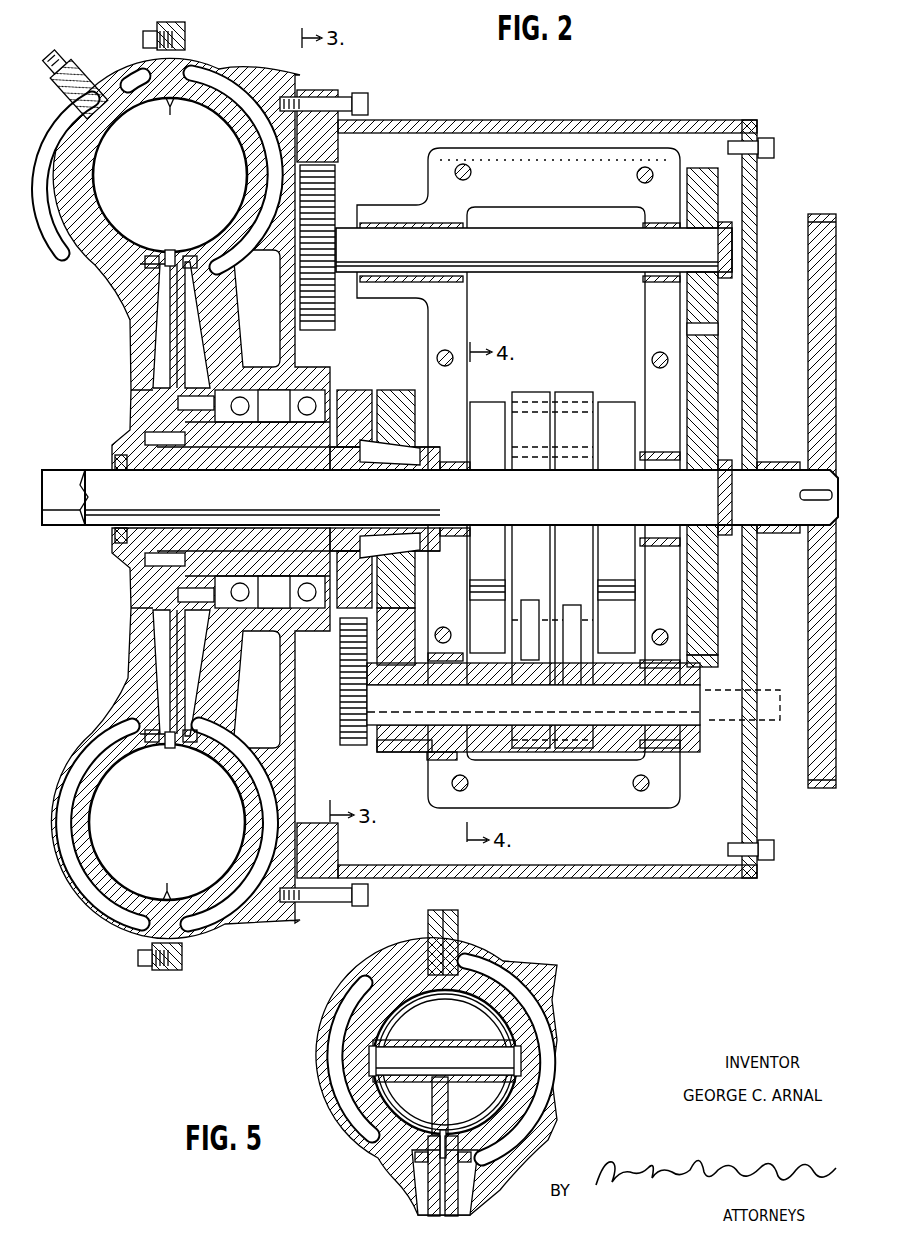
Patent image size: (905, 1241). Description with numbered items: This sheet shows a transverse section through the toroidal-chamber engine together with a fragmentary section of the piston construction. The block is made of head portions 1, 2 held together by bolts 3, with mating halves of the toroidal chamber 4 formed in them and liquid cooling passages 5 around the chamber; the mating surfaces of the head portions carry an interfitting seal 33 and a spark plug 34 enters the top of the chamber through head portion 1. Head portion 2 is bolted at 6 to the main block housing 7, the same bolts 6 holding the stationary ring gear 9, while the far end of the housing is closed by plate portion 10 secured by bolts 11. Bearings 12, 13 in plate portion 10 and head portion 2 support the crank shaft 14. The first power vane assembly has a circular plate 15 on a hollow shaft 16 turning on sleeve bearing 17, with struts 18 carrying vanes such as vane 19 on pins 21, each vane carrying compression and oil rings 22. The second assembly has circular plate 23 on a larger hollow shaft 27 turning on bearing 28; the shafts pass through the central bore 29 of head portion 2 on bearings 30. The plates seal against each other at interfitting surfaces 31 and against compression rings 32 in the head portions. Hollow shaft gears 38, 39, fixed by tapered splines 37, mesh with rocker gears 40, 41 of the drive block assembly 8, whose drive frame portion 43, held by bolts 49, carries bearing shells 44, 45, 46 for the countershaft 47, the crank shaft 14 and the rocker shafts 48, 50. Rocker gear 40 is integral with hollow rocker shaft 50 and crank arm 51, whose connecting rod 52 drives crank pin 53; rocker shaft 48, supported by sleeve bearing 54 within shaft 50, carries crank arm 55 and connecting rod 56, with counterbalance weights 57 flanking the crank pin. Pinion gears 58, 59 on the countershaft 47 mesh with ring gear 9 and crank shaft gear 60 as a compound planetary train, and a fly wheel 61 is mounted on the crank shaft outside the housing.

In FIG. 2, the head portion 1 is at (56, 162).
In FIG. 5, the head portion 1 is at (332, 1066).
In FIG. 2, the head portion 2 is at (224, 70).
In FIG. 5, the head portion 2 is at (488, 972).
In FIG. 2, the bolt 3 is at (146, 40).
In FIG. 2, the toroidal chamber 4 is at (96, 176).
In FIG. 5, the toroidal chamber 4 is at (445, 1062).
In FIG. 2, the liquid cooling passage 5 is at (258, 170).
In FIG. 5, the liquid cooling passage 5 is at (441, 1059).
In FIG. 2, the bolt 6 is at (362, 100).
In FIG. 2, the main block housing 7 is at (580, 120).
In FIG. 2, the drive block assembly 8 is at (628, 820).
In FIG. 2, the ring gear 9 is at (336, 152).
In FIG. 2, the plate portion 10 is at (750, 708).
In FIG. 2, the bolt 11 is at (770, 142).
In FIG. 2, the bearing 12 is at (116, 536).
In FIG. 2, the bearing 13 is at (778, 536).
In FIG. 2, the crank shaft 14 is at (256, 500).
In FIG. 2, the circular plate 15 is at (158, 339).
In FIG. 5, the circular plate 15 is at (428, 1192).
In FIG. 2, the hollow shaft 16 is at (194, 460).
In FIG. 2, the bearing 17 is at (224, 462).
In FIG. 5, the strut 18 is at (449, 1106).
In FIG. 5, the vane 19 is at (412, 998).
In FIG. 5, the pin 21 is at (456, 1056).
In FIG. 5, the compression and oil ring 22 is at (520, 1058).
In FIG. 2, the circular plate 23 is at (180, 352).
In FIG. 5, the circular plate 23 is at (460, 1200).
In FIG. 2, the hollow shaft 27 is at (302, 452).
In FIG. 2, the bearing 28 is at (326, 468).
In FIG. 2, the central bore 29 is at (278, 612).
In FIG. 2, the bearing 30 is at (250, 407).
In FIG. 2, the interfitting circular-faced surfaces 31 is at (170, 250).
In FIG. 5, the interfitting circular-faced surfaces 31 is at (436, 1126).
In FIG. 2, the compression ring 32 is at (152, 256).
In FIG. 5, the compression ring 32 is at (472, 1160).
In FIG. 2, the interfitting seal 33 is at (172, 100).
In FIG. 2, the spark plug 34 is at (66, 84).
In FIG. 2, the tapered spline 37 is at (384, 464).
In FIG. 2, the hollow shaft gear 38 is at (396, 400).
In FIG. 2, the hollow shaft gear 39 is at (352, 396).
In FIG. 2, the rocker gear 40 is at (404, 630).
In FIG. 2, the rocker gear 41 is at (340, 654).
In FIG. 2, the drive frame portion 43 is at (604, 176).
In FIG. 2, the bearing shell 44 is at (436, 278).
In FIG. 2, the bearing shell 45 is at (452, 466).
In FIG. 2, the bearing shell 46 is at (432, 760).
In FIG. 2, the countershaft 47 is at (570, 252).
In FIG. 2, the rocker shaft 48 is at (476, 708).
In FIG. 2, the bolt 49 is at (458, 178).
In FIG. 2, the hollow rocker shaft 50 is at (392, 752).
In FIG. 2, the crank arm 51 is at (530, 610).
In FIG. 2, the connecting rod 52 is at (540, 499).
In FIG. 2, the crank pin 53 is at (510, 404).
In FIG. 2, the sleeve bearing 54 is at (424, 688).
In FIG. 2, the crank arm 55 is at (582, 674).
In FIG. 2, the connecting rod 56 is at (583, 499).
In FIG. 2, the counterbalance weight 57 is at (494, 590).
In FIG. 2, the pinion gear 58 is at (330, 194).
In FIG. 2, the pinion gear 59 is at (698, 176).
In FIG. 2, the crank shaft gear 60 is at (704, 668).
In FIG. 2, the fly wheel 61 is at (806, 766).